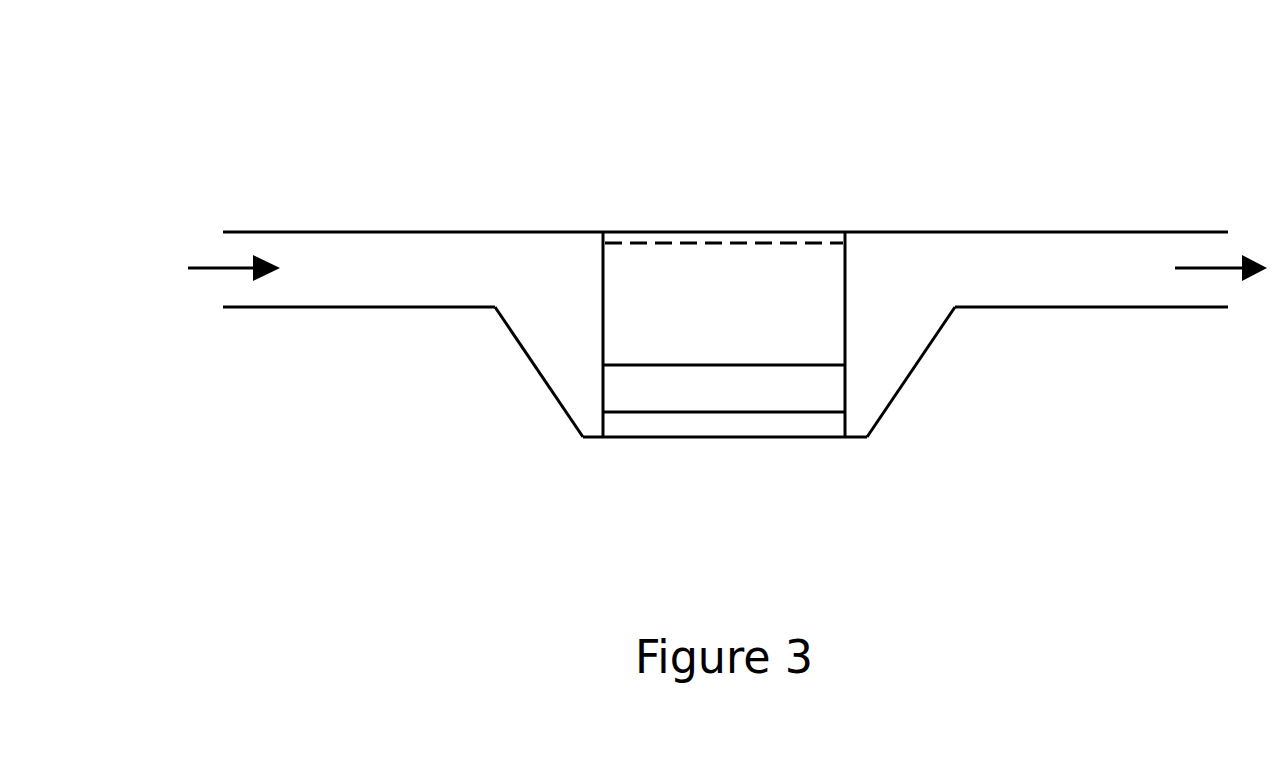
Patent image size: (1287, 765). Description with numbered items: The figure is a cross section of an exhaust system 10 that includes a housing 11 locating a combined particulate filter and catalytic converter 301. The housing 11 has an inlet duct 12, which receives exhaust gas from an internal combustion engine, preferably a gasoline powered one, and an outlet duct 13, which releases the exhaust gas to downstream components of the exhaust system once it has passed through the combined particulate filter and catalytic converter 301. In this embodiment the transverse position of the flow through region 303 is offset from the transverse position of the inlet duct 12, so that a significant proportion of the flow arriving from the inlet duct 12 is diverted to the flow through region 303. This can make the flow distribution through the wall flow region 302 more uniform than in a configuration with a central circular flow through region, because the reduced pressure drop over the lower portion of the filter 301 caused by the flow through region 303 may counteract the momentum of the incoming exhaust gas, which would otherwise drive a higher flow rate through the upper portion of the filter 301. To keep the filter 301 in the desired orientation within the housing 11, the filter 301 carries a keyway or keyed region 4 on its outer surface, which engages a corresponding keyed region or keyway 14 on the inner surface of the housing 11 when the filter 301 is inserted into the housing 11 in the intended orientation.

The exhaust system 10 is at (220, 132).
The inlet duct 12 is at (295, 307).
The outlet duct 13 is at (1156, 307).
The housing 11 is at (593, 440).
The combined particulate filter and catalytic converter 301 is at (603, 268).
The wall flow region 302 is at (658, 271).
The flow through region 303 is at (692, 395).
The keyed region or keyway 14 is at (715, 243).
The keyway or keyed region 4 is at (757, 235).